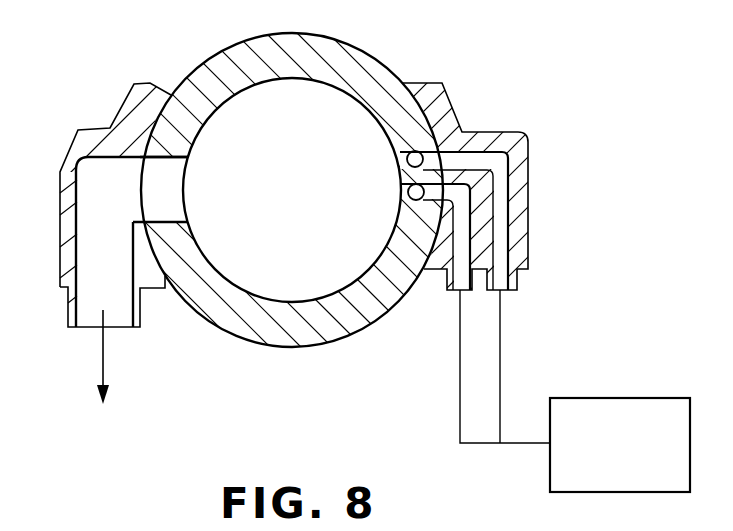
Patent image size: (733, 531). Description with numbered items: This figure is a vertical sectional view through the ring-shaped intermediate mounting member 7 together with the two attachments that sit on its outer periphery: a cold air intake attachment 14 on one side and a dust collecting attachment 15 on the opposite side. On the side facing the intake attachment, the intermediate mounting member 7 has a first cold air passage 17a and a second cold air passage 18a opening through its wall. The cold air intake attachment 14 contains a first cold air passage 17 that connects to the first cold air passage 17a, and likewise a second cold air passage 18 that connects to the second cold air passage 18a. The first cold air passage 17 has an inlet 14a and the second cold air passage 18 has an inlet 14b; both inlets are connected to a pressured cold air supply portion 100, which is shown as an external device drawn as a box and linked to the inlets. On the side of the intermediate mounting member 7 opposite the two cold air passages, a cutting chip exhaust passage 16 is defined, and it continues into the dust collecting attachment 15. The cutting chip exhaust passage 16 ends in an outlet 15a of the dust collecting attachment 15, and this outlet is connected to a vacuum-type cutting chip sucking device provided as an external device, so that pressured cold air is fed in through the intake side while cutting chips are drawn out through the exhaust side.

The intermediate mounting member 7 is at (382, 62).
The cold air intake attachment 14 is at (522, 141).
The inlet of the first cold air passage 14a is at (459, 292).
The inlet of the second cold air passage 14b is at (503, 292).
The dust collecting attachment 15 is at (67, 147).
The outlet of the cutting chip exhaust passage 15a is at (116, 328).
The cutting chip exhaust passage 16 is at (176, 198).
The first cold air passage 17 is at (464, 234).
The first cold air passage 17a is at (409, 194).
The second cold air passage 18 is at (473, 157).
The second cold air passage 18a is at (407, 157).
The pressured cold air supply portion 100 is at (621, 398).